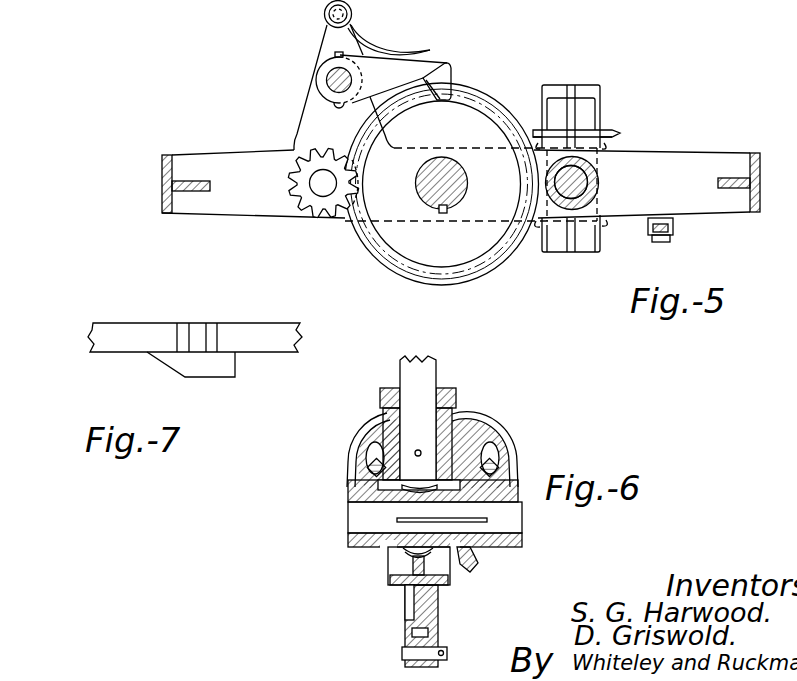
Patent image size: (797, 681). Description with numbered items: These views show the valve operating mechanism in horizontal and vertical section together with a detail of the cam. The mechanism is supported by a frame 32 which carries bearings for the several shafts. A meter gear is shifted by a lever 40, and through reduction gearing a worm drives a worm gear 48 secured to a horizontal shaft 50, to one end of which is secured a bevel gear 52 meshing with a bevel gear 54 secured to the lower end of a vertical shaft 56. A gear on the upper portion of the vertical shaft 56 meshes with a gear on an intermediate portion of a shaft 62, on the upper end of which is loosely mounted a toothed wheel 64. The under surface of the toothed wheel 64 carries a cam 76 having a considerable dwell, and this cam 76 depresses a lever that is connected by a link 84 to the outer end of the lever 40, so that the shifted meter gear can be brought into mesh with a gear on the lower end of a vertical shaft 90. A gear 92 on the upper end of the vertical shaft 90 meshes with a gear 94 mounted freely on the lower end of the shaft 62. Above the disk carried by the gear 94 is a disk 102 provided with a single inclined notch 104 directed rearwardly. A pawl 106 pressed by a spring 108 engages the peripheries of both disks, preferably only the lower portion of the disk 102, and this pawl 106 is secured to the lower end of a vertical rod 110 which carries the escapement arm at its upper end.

In FIG. 5, the frame 32 is at (748, 194).
In FIG. 6, the lever 40 is at (410, 638).
In FIG. 6, the worm gear 48 is at (405, 552).
In FIG. 6, the horizontal shaft 50 is at (360, 523).
In FIG. 5, the bevel gear 52 is at (616, 132).
In FIG. 6, the bevel gear 52 is at (479, 565).
In FIG. 5, the bevel gear 54 is at (620, 137).
In FIG. 6, the bevel gear 54 is at (463, 470).
In FIG. 5, the vertical shaft 56 is at (600, 251).
In FIG. 6, the vertical shaft 56 is at (429, 380).
In FIG. 5, the shaft 62 is at (455, 170).
In FIG. 7, the toothed wheel 64 is at (147, 330).
In FIG. 7, the cam 76 is at (213, 371).
In FIG. 5, the link 84 is at (660, 244).
In FIG. 5, the vertical shaft 90 is at (323, 188).
In FIG. 5, the gear 92 is at (303, 210).
In FIG. 5, the gear 94 is at (373, 250).
In FIG. 5, the disk 102 is at (438, 285).
In FIG. 5, the inclined notch 104 is at (446, 71).
In FIG. 5, the pawl 106 is at (453, 72).
In FIG. 5, the spring 108 is at (400, 46).
In FIG. 5, the vertical rod 110 is at (326, 72).